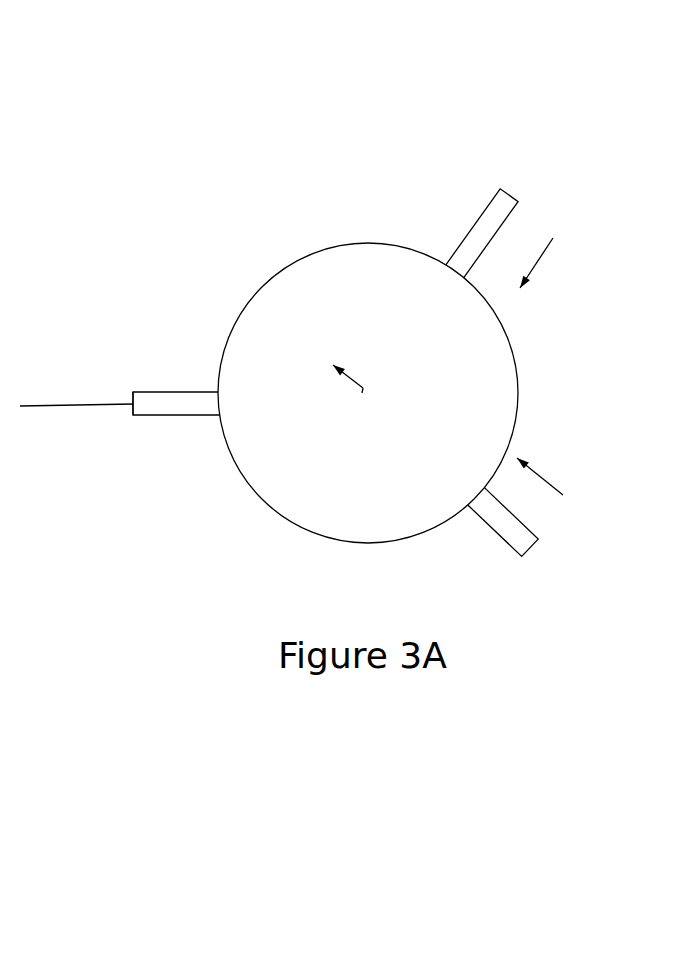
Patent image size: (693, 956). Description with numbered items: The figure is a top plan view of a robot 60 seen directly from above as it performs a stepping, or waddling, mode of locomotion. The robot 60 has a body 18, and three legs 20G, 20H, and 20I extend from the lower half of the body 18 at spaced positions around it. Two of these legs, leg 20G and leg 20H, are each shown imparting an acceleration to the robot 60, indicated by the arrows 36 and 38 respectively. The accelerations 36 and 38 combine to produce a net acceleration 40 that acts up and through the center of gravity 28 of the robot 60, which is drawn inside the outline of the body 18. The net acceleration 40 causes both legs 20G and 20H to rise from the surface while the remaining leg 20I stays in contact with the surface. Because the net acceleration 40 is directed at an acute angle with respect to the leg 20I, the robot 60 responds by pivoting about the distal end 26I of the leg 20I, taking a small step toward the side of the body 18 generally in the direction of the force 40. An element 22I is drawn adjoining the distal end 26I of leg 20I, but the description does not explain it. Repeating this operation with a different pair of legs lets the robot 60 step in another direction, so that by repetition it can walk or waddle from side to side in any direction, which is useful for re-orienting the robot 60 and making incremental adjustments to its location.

The robot 60 is at (479, 158).
The body 18 is at (262, 500).
The leg 20H is at (490, 203).
The leg 20I is at (173, 392).
The leg 20G is at (537, 535).
The optical fiber 22I is at (35, 405).
The distal end 26I is at (127, 413).
The center of gravity 28 is at (362, 393).
The acceleration 36 is at (537, 472).
The acceleration 38 is at (545, 250).
The net acceleration 40 is at (353, 379).